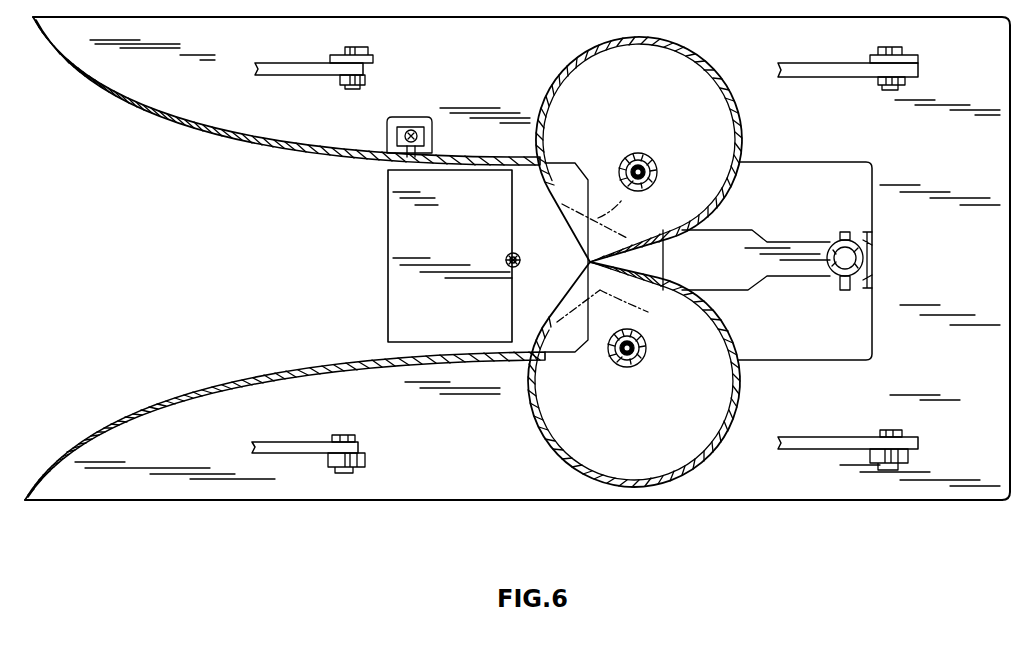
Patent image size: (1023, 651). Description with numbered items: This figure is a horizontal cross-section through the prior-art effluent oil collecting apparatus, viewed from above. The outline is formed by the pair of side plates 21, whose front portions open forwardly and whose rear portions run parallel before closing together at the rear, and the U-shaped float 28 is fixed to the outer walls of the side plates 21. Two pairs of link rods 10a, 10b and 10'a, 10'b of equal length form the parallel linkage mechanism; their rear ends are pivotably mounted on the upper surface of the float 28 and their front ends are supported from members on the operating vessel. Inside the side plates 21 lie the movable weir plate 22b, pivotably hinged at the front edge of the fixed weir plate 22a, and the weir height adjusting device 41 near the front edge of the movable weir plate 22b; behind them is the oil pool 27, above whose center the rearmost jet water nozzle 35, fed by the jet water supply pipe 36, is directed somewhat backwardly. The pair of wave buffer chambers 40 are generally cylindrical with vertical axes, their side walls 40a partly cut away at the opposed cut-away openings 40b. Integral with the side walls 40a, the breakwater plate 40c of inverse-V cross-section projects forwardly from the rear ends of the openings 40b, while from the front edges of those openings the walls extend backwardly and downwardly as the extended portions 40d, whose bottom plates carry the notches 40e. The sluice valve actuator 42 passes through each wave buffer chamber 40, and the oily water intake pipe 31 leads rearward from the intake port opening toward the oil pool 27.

The side plates 21 is at (205, 135).
The U-shaped float 28 is at (213, 483).
The link rod 10b is at (320, 75).
The link rod 10'b is at (308, 432).
The link rod 10a is at (838, 78).
The link rod 10'a is at (848, 431).
The weir height adjusting device 41 is at (413, 128).
The movable weir plate 22b is at (470, 304).
The fixed weir plate 22a is at (565, 304).
The oil pool 27 is at (556, 228).
The jet water nozzle 35 is at (522, 261).
The jet water supply pipe 36 is at (505, 262).
The notches 40e is at (596, 152).
The side walls 40a is at (560, 76).
The wave buffer chambers 40 is at (751, 76).
The sluice valve actuator 42 is at (660, 163).
The cut-away openings 40b is at (623, 264).
The extended portions of side walls 40d is at (548, 183).
The breakwater plate 40c is at (643, 254).
The oily water intake pipe 31 is at (790, 260).